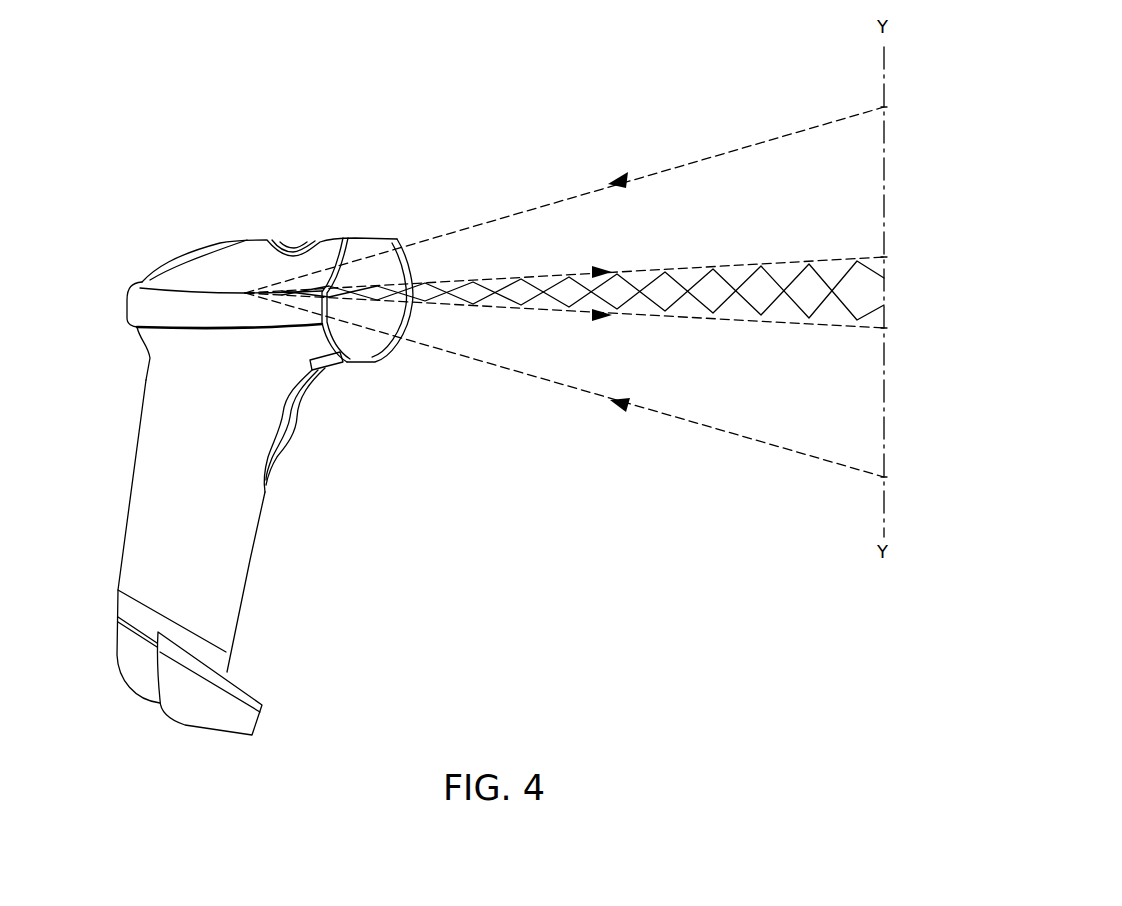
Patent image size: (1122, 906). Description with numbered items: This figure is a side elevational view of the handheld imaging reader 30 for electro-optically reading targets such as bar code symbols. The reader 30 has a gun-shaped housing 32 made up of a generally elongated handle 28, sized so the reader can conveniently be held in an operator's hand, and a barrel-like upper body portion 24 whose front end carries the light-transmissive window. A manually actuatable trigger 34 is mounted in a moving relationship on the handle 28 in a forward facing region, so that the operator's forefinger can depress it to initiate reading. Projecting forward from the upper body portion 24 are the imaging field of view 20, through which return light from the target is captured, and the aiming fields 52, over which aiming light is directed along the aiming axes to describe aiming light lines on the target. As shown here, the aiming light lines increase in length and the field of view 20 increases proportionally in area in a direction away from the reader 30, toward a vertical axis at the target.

The imaging field of view 20 is at (705, 178).
The upper body portion 24 is at (253, 239).
The handle 28 is at (122, 507).
The handheld imaging reader 30 is at (116, 272).
The housing 32 is at (142, 378).
The trigger 34 is at (302, 430).
The aiming field 52 is at (888, 290).